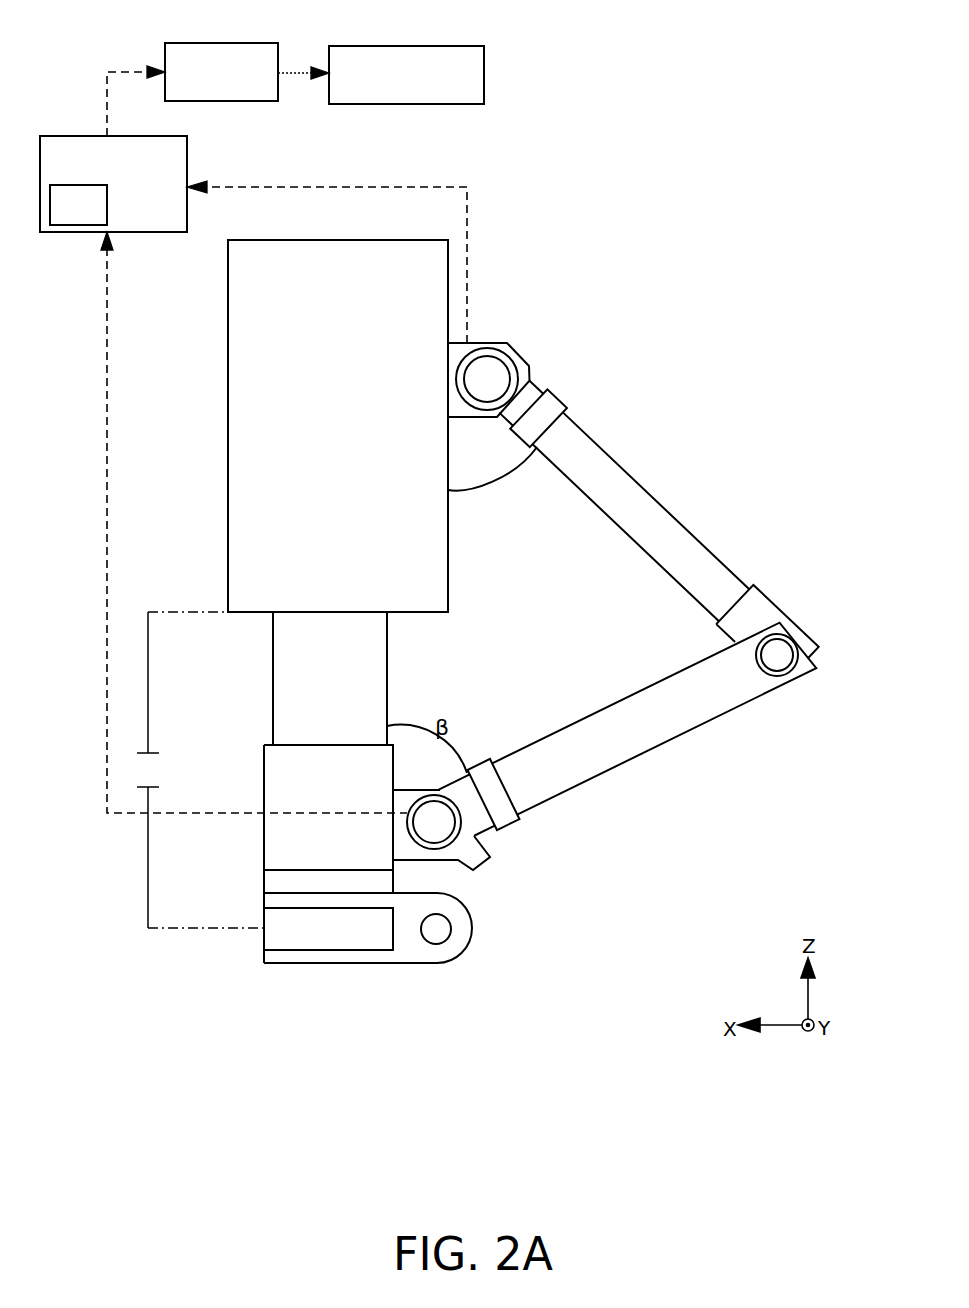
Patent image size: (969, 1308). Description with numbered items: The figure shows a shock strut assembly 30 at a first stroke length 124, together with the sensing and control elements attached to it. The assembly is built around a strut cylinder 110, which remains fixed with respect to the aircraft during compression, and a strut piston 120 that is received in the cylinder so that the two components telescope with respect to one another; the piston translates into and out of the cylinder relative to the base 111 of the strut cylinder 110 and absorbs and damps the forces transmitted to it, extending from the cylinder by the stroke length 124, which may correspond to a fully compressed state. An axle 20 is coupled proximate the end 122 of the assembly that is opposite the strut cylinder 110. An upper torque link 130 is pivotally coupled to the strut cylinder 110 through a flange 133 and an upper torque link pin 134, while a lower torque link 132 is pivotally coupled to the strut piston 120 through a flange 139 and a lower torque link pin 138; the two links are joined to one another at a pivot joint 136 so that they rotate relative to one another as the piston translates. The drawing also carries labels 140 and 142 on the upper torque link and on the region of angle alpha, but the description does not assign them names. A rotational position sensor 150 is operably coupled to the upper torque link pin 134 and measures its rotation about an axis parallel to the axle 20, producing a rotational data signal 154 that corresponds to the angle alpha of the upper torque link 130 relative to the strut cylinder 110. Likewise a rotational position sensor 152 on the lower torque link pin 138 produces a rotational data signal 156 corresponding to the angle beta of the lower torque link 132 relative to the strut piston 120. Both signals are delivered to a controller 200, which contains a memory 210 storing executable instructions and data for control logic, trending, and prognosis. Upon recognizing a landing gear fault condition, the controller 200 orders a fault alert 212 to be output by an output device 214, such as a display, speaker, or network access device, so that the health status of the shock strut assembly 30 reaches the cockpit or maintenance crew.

The axle 20 is at (435, 932).
The shock strut assembly 30 is at (648, 158).
The strut cylinder 110 is at (240, 383).
The base 111 is at (420, 612).
The strut piston 120 is at (298, 700).
The end 122 is at (315, 965).
The stroke length 124 is at (196, 770).
The upper torque link 130 is at (657, 531).
The lower torque link 132 is at (623, 718).
The flange 133 is at (522, 363).
The upper torque link pin 134 is at (489, 368).
The pivot joint 136 is at (770, 660).
The lower torque link pin 138 is at (430, 832).
The flange 139 is at (482, 852).
The actuator rod 140 is at (703, 553).
The pivot angle region 142 is at (487, 532).
The rotational position sensor 150 is at (467, 373).
The rotational position sensor 152 is at (407, 828).
The rotational data signal 154 is at (463, 187).
The rotational data signal 156 is at (107, 503).
The controller 200 is at (133, 181).
The memory 210 is at (78, 205).
The fault alert 212 is at (267, 57).
The output device 214 is at (477, 72).